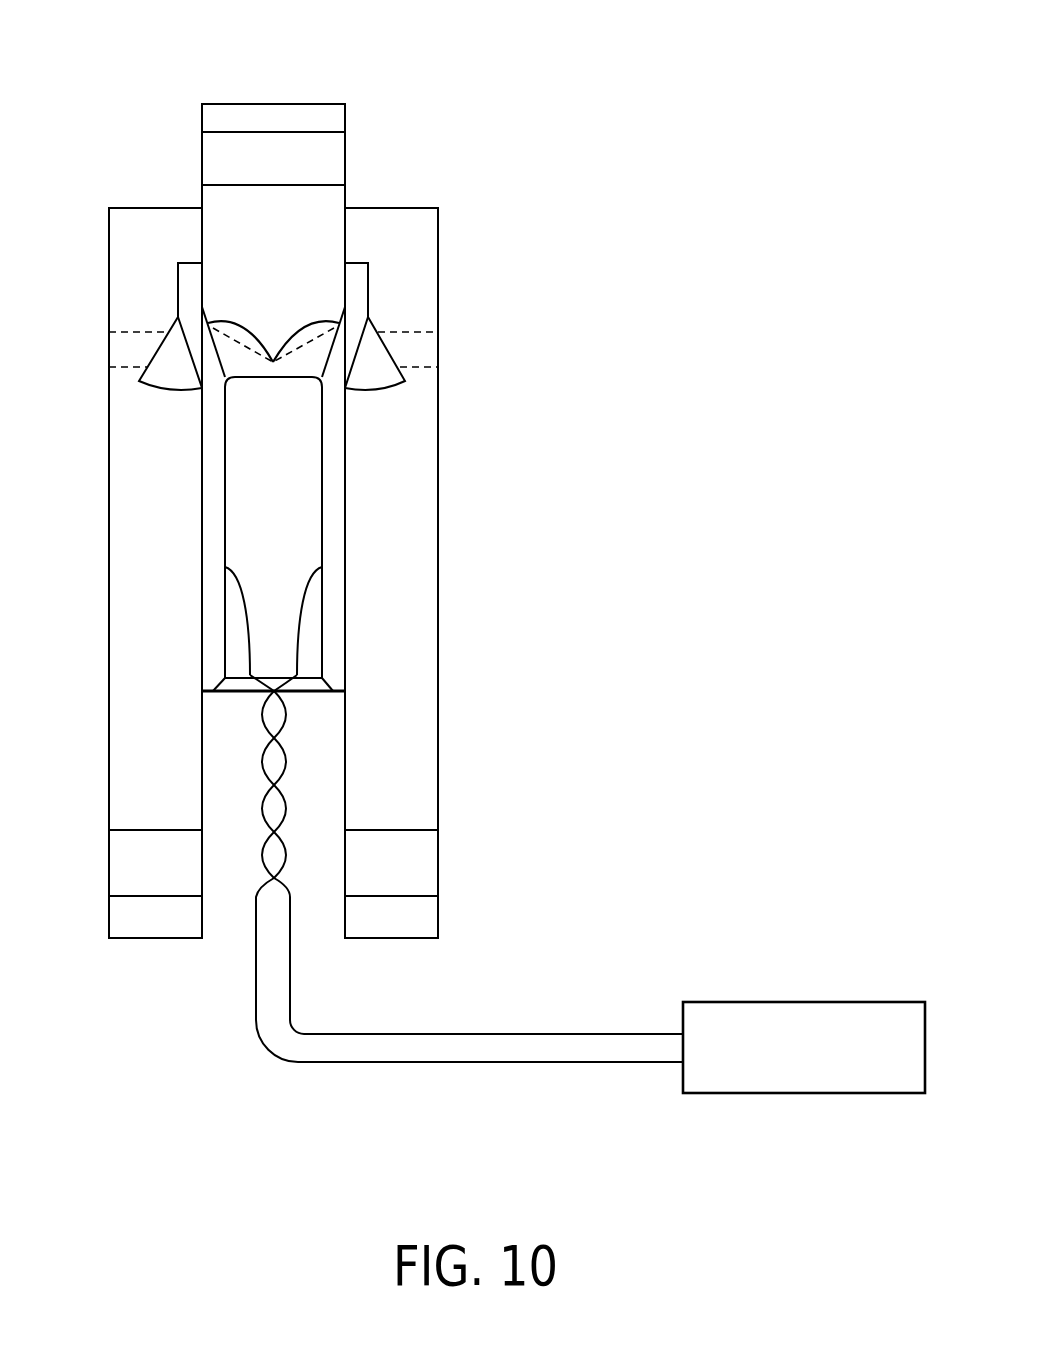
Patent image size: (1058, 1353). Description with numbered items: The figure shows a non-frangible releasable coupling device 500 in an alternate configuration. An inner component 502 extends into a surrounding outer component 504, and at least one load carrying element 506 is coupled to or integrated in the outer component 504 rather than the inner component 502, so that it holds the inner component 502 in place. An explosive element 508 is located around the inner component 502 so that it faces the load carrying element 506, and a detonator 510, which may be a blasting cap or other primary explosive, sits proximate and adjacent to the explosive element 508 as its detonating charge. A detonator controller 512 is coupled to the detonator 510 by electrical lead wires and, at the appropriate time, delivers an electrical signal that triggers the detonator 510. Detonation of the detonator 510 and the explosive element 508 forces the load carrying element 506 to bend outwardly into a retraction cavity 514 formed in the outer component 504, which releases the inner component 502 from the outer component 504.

The non-frangible releasable coupling device 500 is at (665, 103).
The inner component 502 is at (292, 110).
The outer component 504 is at (132, 208).
The load carrying element 506 is at (190, 292).
The explosive element 508 is at (309, 353).
The detonator 510 is at (302, 509).
The detonator controller 512 is at (872, 1002).
The retraction cavity 514 is at (177, 378).